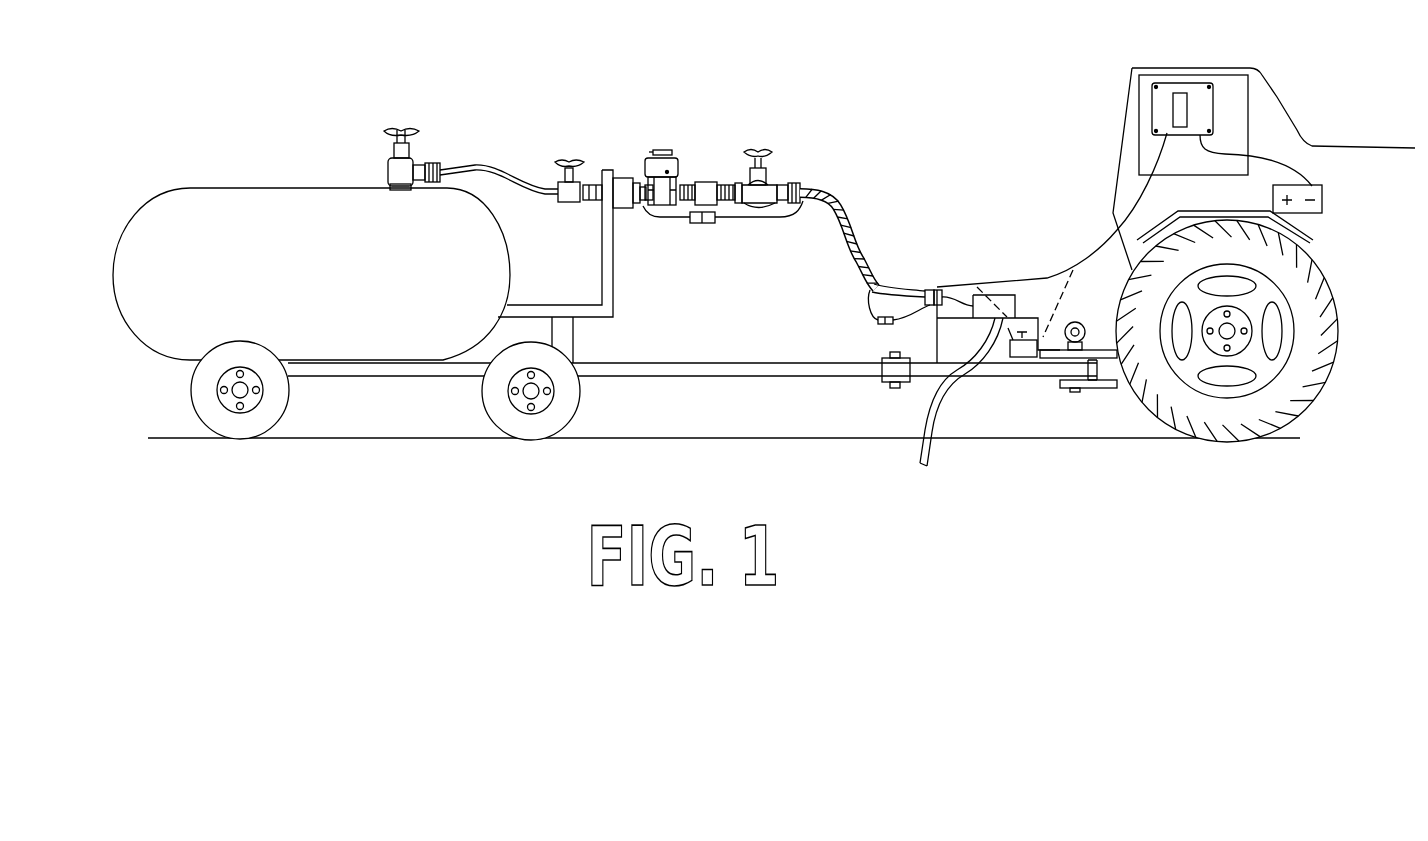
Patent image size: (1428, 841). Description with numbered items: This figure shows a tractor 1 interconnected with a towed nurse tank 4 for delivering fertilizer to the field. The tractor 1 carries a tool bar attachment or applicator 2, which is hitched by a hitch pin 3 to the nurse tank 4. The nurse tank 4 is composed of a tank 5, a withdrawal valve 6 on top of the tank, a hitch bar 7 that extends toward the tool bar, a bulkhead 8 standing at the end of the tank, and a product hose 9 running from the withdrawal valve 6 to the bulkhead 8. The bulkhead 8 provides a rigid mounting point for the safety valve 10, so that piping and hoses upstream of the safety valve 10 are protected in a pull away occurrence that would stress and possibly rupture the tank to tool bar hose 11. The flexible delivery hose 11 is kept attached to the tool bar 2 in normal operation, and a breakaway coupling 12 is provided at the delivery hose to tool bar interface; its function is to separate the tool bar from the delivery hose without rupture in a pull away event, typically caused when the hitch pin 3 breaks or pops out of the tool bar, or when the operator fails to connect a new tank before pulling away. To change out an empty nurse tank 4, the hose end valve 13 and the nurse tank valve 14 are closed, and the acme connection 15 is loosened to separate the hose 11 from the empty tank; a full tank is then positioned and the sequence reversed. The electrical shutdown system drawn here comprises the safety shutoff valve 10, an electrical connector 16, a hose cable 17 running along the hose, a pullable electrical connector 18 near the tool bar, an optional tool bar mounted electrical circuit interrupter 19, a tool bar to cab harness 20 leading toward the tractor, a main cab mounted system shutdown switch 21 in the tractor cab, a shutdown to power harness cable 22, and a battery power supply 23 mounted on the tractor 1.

The tractor 1 is at (1328, 92).
The tool bar attachment 2 is at (974, 268).
The hitch pin 3 is at (893, 387).
The nurse tank 4 is at (283, 138).
The tank 5 is at (300, 286).
The withdrawal valve 6 is at (412, 157).
The hitch bar 7 is at (722, 364).
The bulkhead 8 is at (606, 283).
The product hose 9 is at (512, 178).
The safety valve 10 is at (669, 137).
The tank to tool bar hose 11 is at (842, 207).
The breakaway coupling 12 is at (928, 290).
The hose end valve 13 is at (763, 142).
The nurse tank valve 14 is at (577, 160).
The acme connection 15 is at (707, 185).
The electrical connector 16 is at (703, 224).
The hose cable 17 is at (770, 219).
The pullable electrical connector 18 is at (880, 323).
The tool bar mounted electrical circuit interrupter 19 is at (1023, 350).
The tool bar to cab harness 20 is at (1027, 280).
The main cab mounted system shutdown switch 21 is at (1163, 92).
The shutdown to power harness cable 22 is at (1255, 157).
The battery power supply 23 is at (1318, 207).